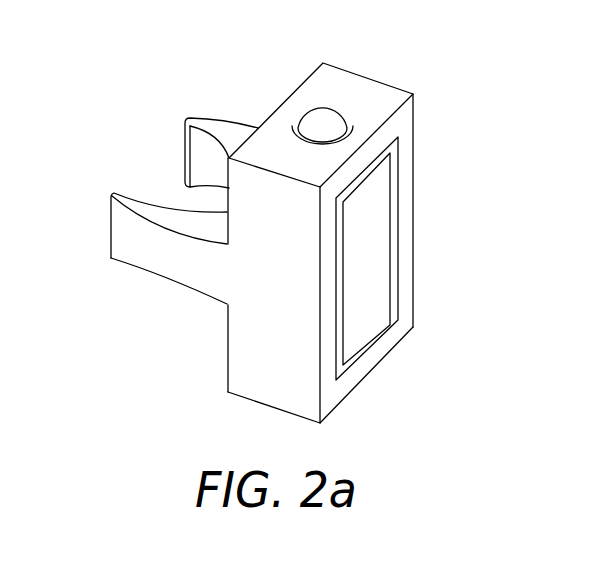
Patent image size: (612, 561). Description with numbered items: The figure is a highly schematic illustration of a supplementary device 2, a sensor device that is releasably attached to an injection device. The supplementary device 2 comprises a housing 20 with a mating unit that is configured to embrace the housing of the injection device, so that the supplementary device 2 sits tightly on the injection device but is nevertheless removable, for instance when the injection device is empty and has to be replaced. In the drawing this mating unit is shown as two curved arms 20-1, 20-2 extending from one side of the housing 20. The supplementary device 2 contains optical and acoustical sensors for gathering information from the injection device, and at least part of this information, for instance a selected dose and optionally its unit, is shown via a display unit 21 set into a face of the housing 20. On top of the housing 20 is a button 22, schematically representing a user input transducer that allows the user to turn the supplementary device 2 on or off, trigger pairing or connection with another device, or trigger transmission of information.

The supplementary device 2 is at (427, 57).
The housing 20 is at (272, 390).
The lower curved arm 20-1 is at (122, 193).
The upper curved arm 20-2 is at (193, 120).
The display unit 21 is at (382, 228).
The button 22 is at (323, 110).